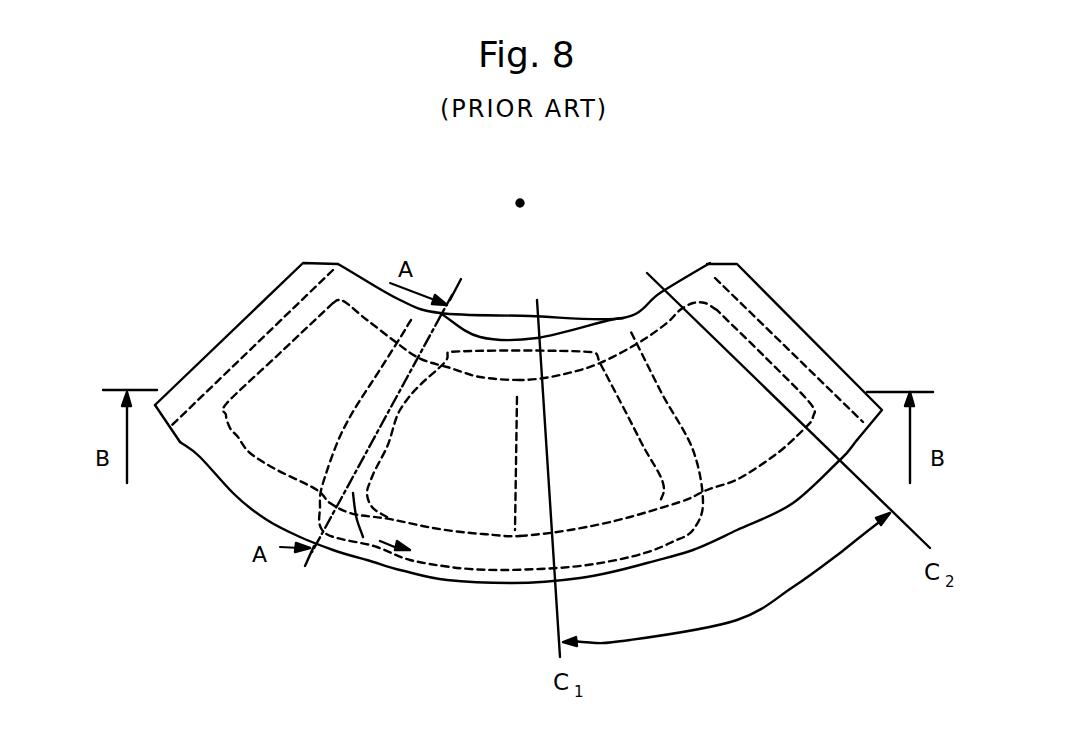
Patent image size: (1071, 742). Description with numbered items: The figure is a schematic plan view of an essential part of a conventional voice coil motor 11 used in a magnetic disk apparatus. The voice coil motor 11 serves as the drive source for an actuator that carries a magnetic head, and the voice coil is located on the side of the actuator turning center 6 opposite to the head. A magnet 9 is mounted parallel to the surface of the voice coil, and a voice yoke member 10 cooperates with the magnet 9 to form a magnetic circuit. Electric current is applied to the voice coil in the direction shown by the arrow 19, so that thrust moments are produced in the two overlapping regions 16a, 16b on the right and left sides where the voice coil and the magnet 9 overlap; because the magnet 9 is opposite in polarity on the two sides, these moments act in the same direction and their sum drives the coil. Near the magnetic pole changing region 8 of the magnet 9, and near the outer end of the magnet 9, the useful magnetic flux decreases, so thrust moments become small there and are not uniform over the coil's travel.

The actuator turning center 6 is at (520, 202).
The magnetic pole changing region 8 is at (517, 397).
The magnet 9 is at (441, 545).
The voice yoke member 10 is at (240, 327).
The voice coil motor 11 is at (213, 492).
The overlapping region 16a is at (375, 420).
The overlapping region 16b is at (683, 462).
The arrow indicating electric current 19 is at (363, 537).